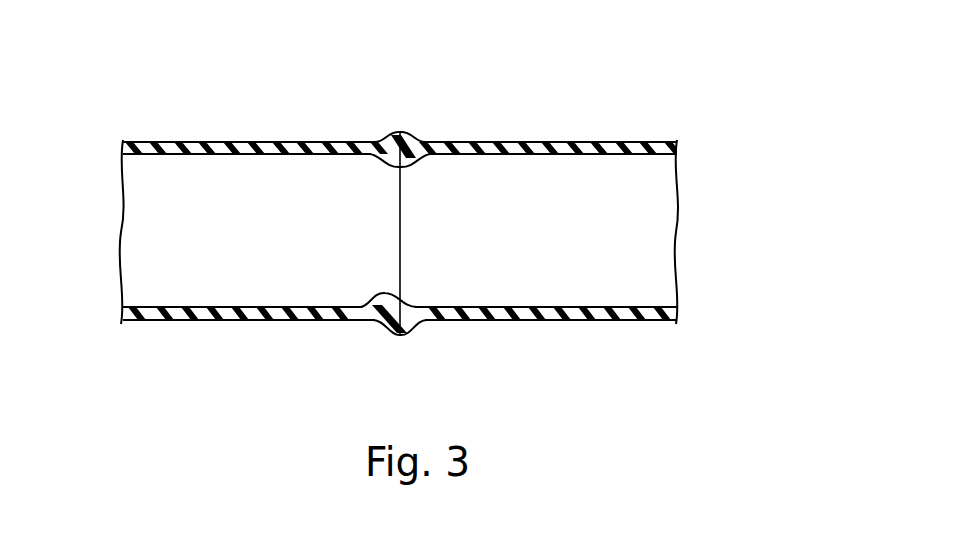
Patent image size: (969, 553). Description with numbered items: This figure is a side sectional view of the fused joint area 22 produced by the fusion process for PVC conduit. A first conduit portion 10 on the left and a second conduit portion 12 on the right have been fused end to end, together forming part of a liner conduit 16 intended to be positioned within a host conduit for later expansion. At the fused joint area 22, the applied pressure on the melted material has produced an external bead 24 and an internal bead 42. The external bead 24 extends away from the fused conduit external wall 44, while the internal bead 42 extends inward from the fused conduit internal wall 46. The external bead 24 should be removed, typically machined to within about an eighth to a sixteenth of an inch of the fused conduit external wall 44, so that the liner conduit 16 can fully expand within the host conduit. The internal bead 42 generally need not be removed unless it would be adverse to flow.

The first conduit portion 10 is at (176, 322).
The second conduit portion 12 is at (632, 142).
The liner conduit 16 is at (154, 135).
The fused joint area 22 is at (410, 212).
The external bead 24 is at (367, 348).
The internal bead 42 is at (338, 348).
The fused conduit external wall 44 is at (226, 142).
The fused conduit internal wall 46 is at (504, 305).